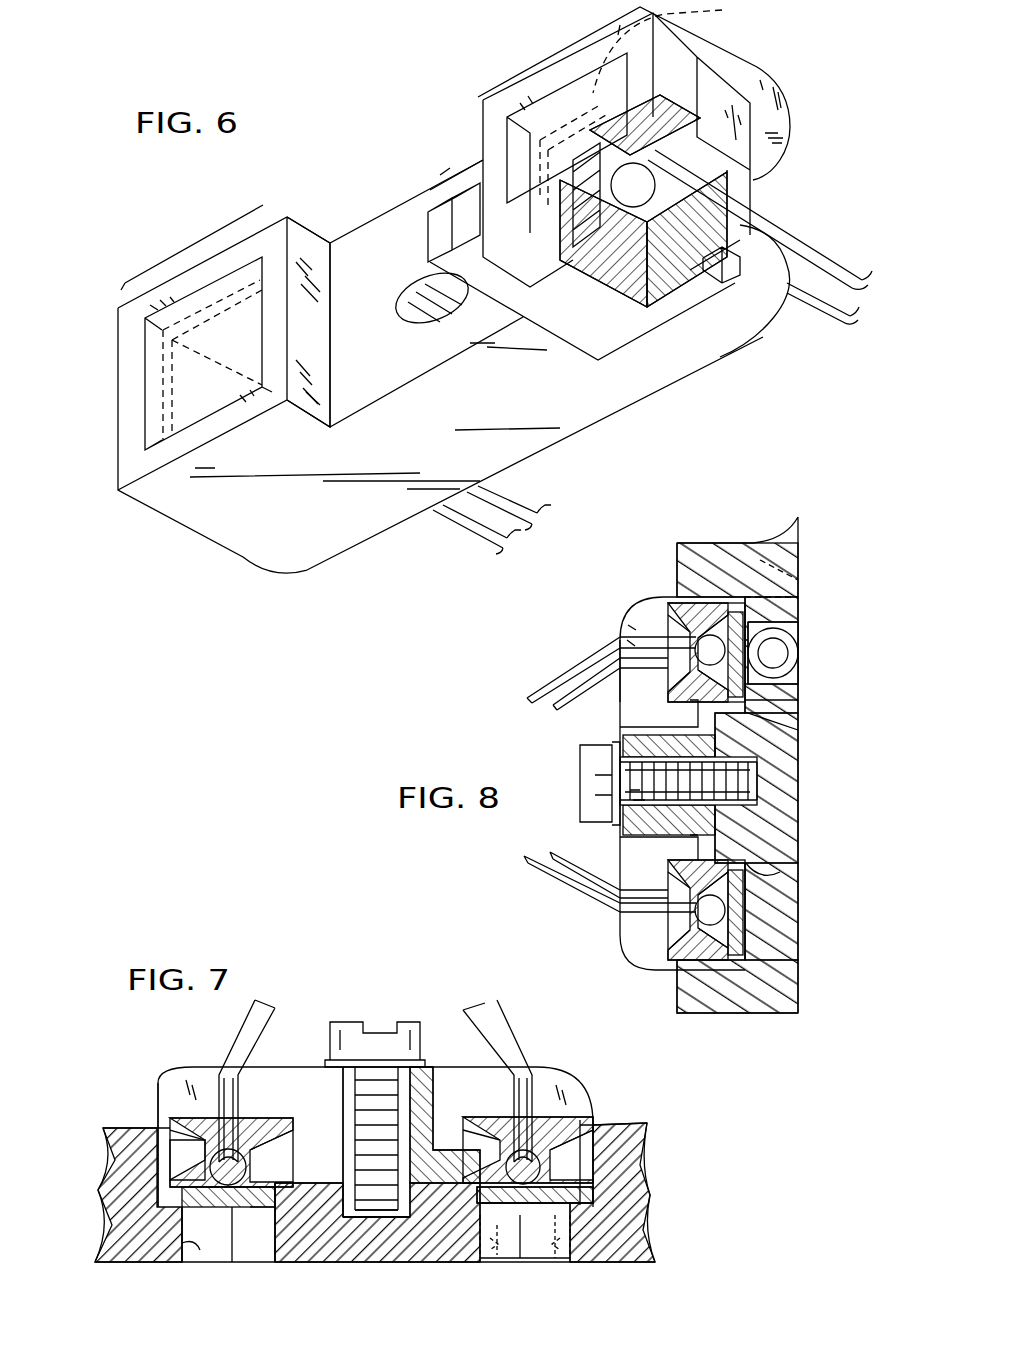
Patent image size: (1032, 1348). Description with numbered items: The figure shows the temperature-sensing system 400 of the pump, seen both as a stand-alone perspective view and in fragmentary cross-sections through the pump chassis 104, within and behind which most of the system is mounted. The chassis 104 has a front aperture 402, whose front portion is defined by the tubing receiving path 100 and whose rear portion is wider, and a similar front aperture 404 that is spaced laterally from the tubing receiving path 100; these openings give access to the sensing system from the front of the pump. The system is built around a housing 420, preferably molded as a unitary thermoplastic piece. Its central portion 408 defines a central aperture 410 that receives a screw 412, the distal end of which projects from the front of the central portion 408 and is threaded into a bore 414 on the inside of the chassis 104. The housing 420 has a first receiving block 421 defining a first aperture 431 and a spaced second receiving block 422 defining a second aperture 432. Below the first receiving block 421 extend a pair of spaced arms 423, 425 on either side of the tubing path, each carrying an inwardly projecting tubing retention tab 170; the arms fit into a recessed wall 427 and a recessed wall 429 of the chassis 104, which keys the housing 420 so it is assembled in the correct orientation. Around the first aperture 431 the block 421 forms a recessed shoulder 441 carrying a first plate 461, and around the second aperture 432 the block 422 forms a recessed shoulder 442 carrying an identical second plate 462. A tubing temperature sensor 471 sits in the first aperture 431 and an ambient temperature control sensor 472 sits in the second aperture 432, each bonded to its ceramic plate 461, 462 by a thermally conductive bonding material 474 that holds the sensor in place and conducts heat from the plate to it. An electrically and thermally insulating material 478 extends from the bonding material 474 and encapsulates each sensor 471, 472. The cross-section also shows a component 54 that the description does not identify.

In FIG. 7, the tubing receiving path 100 is at (513, 1230).
In FIG. 8, the pump chassis 104 is at (757, 530).
In FIG. 7, the pump chassis 104 is at (655, 1245).
In FIG. 6, the tubing retention tab 170 is at (467, 193).
In FIG. 7, the tubing retention tab 170 is at (543, 1262).
In FIG. 8, the temperature-sensing system 400 is at (635, 578).
In FIG. 7, the temperature-sensing system 400 is at (152, 1050).
In FIG. 7, the front aperture 402 is at (543, 1263).
In FIG. 8, the front aperture 404 is at (765, 872).
In FIG. 7, the front aperture 404 is at (200, 1252).
In FIG. 6, the central portion 408 is at (355, 255).
In FIG. 7, the central portion 408 is at (423, 1123).
In FIG. 6, the central aperture 410 is at (418, 292).
In FIG. 7, the central aperture 410 is at (358, 1103).
In FIG. 8, the screw 412 is at (580, 792).
In FIG. 7, the screw 412 is at (340, 1030).
In FIG. 7, the bore 414 is at (375, 1237).
In FIG. 6, the housing 420 is at (265, 572).
In FIG. 8, the housing 420 is at (627, 607).
In FIG. 7, the housing 420 is at (548, 1052).
In FIG. 6, the first receiving block 421 is at (553, 45).
In FIG. 6, the second receiving block 422 is at (203, 236).
In FIG. 8, the arm 423 is at (790, 604).
In FIG. 6, the arm 425 is at (468, 277).
In FIG. 8, the arm 425 is at (792, 687).
In FIG. 8, the recessed wall 427 is at (805, 572).
In FIG. 8, the recessed wall 429 is at (798, 703).
In FIG. 7, the first aperture 431 is at (565, 1195).
In FIG. 7, the second aperture 432 is at (190, 1147).
In FIG. 6, the recessed shoulder 441 is at (655, 102).
In FIG. 7, the recessed shoulder 441 is at (457, 1257).
In FIG. 6, the recessed shoulder 442 is at (148, 390).
In FIG. 7, the recessed shoulder 442 is at (253, 1210).
In FIG. 8, the first plate 461 is at (798, 728).
In FIG. 7, the first plate 461 is at (523, 1263).
In FIG. 8, the second plate 462 is at (740, 938).
In FIG. 7, the second plate 462 is at (240, 1217).
In FIG. 6, the tubing temperature sensor 471 is at (633, 207).
In FIG. 8, the tubing temperature sensor 471 is at (693, 673).
In FIG. 7, the tubing temperature sensor 471 is at (523, 1157).
In FIG. 8, the ambient temperature control sensor 472 is at (705, 900).
In FIG. 7, the ambient temperature control sensor 472 is at (200, 1140).
In FIG. 8, the thermally conductive bonding material 474 is at (793, 544).
In FIG. 7, the thermally conductive bonding material 474 is at (185, 1178).
In FIG. 8, the electrically and thermally insulating material 478 is at (667, 613).
In FIG. 8, the seal ring 54 is at (798, 632).